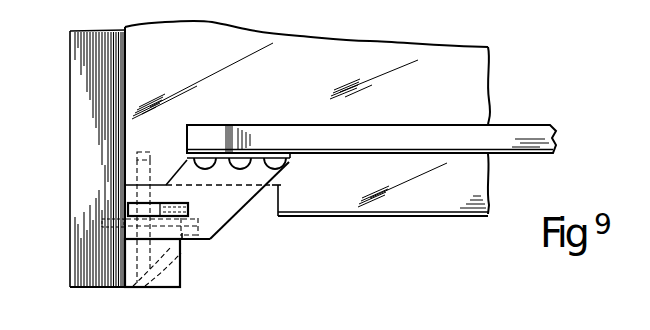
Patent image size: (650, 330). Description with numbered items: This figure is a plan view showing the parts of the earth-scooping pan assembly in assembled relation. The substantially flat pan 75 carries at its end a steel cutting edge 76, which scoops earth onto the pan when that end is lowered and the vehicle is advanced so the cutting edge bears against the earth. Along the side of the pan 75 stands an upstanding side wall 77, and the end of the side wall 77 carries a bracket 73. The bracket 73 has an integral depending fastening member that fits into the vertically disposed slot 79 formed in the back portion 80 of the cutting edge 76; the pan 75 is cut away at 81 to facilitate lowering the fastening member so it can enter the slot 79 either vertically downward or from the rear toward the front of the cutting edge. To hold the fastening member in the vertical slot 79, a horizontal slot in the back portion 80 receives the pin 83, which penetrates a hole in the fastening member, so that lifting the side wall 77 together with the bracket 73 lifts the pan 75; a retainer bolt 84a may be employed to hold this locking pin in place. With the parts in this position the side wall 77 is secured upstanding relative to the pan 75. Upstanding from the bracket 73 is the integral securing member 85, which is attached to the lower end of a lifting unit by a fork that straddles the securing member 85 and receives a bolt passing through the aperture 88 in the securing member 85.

The bracket 73 is at (231, 216).
The pan 75 is at (437, 209).
The steel cutting edge 76 is at (83, 170).
The side wall 77 is at (520, 135).
The vertically disposed slot 79 is at (128, 210).
The back portion 80 is at (172, 289).
The cut away 81 is at (278, 205).
The pin 83 is at (135, 288).
The retainer bolt 84a is at (183, 242).
The securing member 85 is at (187, 203).
The aperture 88 is at (166, 182).